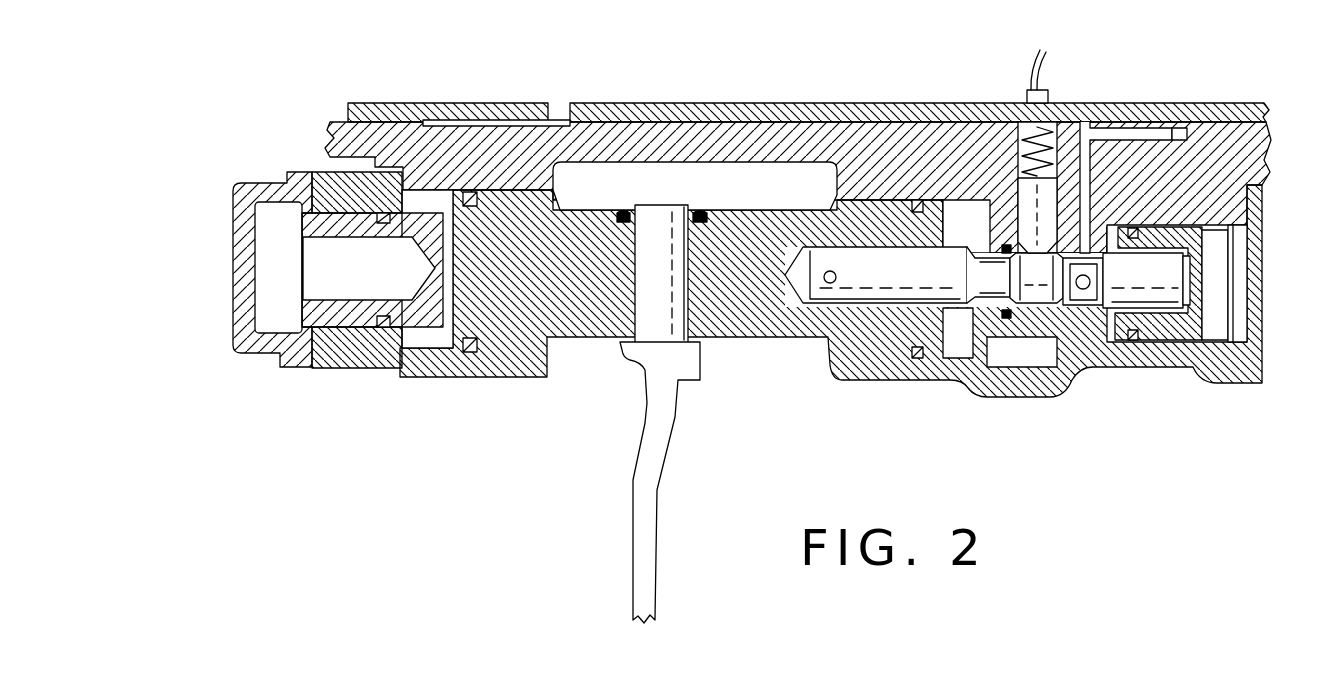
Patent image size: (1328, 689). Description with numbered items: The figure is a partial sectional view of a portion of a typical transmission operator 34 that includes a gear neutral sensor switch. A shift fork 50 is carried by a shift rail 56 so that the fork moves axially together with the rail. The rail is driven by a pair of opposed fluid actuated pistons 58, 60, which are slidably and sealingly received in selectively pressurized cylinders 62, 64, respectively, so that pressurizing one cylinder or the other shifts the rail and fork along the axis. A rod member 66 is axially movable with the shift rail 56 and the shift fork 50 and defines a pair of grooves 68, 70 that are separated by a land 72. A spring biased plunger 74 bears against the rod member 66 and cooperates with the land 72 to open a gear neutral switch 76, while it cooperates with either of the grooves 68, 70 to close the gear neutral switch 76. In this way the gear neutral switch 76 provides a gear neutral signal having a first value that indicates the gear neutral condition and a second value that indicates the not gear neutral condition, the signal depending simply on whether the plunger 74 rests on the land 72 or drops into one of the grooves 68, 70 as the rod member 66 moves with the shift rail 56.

The transmission operator 34 is at (548, 460).
The shift fork 50 is at (646, 550).
The shift rail 56 is at (798, 250).
The fluid actuated piston 58 is at (300, 315).
The fluid actuated piston 60 is at (1168, 327).
The selectively pressurized cylinder 62 is at (270, 270).
The selectively pressurized cylinder 64 is at (1217, 307).
The rod member 66 is at (847, 290).
The groove 68 is at (990, 300).
The groove 70 is at (1086, 290).
The land 72 is at (1033, 300).
The spring biased plunger 74 is at (1023, 195).
The gear neutral switch 76 is at (1030, 100).